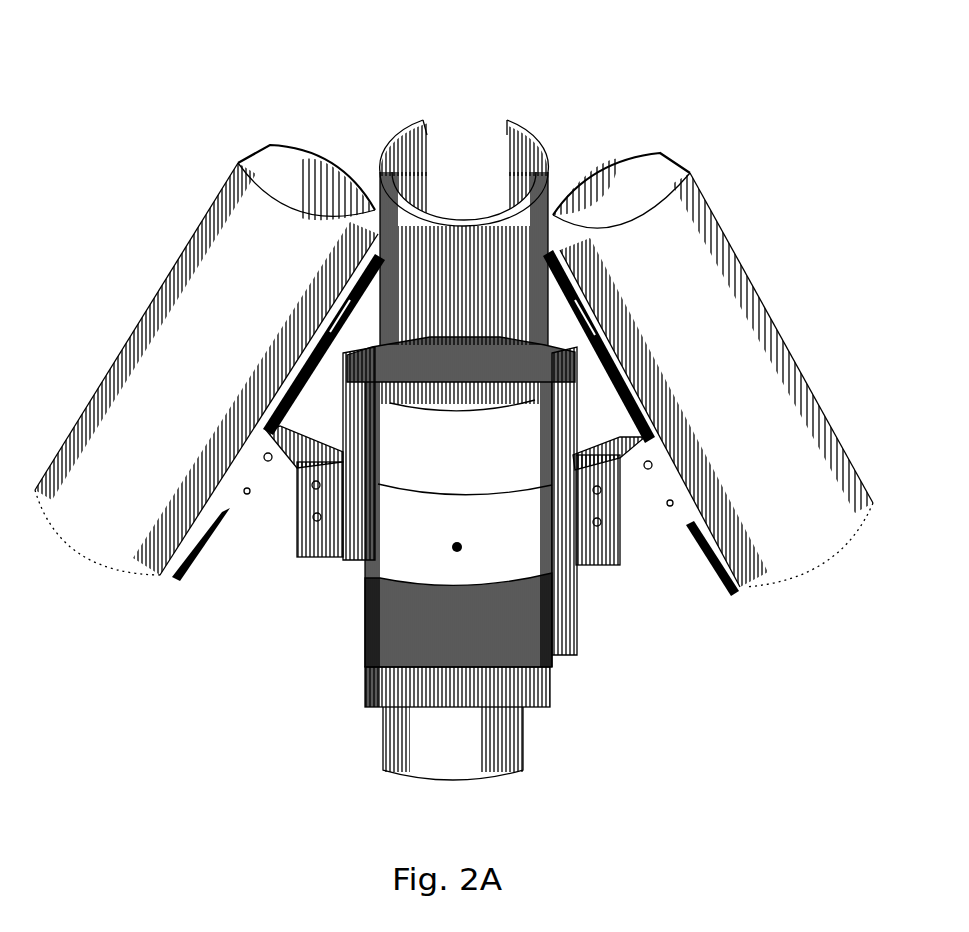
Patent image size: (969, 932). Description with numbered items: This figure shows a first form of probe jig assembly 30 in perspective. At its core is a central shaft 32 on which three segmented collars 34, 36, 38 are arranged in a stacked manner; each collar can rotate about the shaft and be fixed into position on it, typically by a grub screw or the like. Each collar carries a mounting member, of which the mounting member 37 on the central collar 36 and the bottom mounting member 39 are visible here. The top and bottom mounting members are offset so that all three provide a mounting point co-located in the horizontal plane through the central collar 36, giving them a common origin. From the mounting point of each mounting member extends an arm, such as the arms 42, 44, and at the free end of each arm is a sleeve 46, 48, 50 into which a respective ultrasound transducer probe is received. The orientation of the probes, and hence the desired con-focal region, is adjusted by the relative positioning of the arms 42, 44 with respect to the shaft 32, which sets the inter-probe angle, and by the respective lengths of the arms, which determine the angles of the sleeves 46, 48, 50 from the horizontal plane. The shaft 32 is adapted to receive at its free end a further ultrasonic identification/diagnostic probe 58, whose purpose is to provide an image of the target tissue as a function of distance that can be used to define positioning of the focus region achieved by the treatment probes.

The jig assembly 30 is at (183, 123).
The central shaft 32 is at (450, 742).
The segmented collar 34 is at (482, 647).
The central collar 36 is at (418, 532).
The mounting member 37 is at (593, 537).
The segmented collar 38 is at (462, 453).
The mounting member 39 is at (337, 517).
The arm 42 is at (640, 517).
The arm 44 is at (272, 500).
The sleeve 46 is at (543, 148).
The sleeve 48 is at (750, 372).
The sleeve 50 is at (190, 358).
The ultrasonic identification/diagnostic probe 58 is at (445, 340).